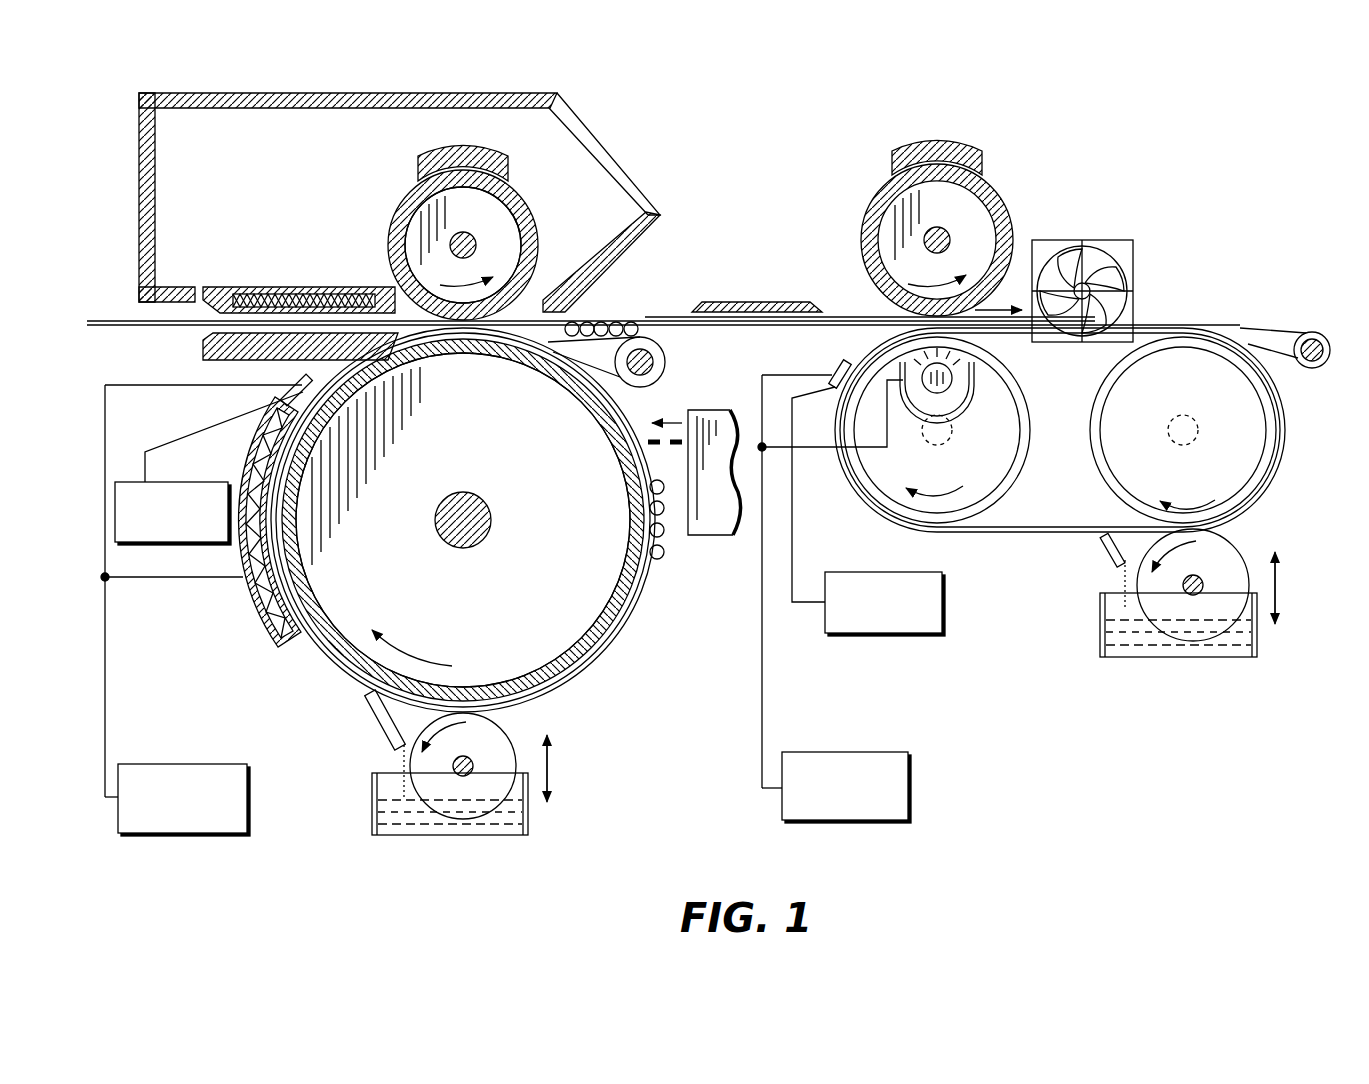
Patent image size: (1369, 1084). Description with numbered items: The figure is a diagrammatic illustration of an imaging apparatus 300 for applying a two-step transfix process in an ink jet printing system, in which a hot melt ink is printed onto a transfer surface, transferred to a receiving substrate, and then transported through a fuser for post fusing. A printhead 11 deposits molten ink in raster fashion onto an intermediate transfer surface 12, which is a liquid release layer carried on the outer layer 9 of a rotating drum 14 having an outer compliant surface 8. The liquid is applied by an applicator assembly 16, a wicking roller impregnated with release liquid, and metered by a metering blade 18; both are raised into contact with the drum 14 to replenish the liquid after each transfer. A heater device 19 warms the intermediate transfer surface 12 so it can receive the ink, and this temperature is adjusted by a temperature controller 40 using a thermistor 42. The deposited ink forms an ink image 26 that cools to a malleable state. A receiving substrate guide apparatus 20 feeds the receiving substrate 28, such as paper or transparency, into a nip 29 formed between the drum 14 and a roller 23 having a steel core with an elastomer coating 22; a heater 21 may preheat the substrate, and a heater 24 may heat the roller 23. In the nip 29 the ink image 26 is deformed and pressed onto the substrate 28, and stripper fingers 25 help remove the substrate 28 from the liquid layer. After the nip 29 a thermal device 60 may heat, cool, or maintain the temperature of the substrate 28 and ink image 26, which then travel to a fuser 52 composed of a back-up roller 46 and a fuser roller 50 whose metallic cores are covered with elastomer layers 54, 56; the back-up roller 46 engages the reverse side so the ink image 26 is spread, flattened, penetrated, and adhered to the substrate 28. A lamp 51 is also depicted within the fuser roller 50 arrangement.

The fuser apparatus 300 is at (130, 126).
The receiving substrate 28 is at (130, 320).
The heater 21 is at (250, 287).
The receiving substrate guide apparatus 20 is at (205, 350).
The elastomer coating 22 is at (537, 228).
The roller 23 is at (410, 205).
The heater 24 is at (508, 160).
The nip 29 is at (515, 309).
The outer compliant surface 8 is at (606, 638).
The drum 14 is at (608, 600).
The intermediate transfer surface 12 is at (642, 596).
The outer layer 9 is at (582, 666).
The heater device 19 is at (250, 450).
The thermistor 42 is at (133, 490).
The temperature controller 40 is at (246, 834).
The metering blade 18 is at (378, 729).
The applicator assembly 16 is at (535, 838).
The stripper fingers 25 is at (648, 381).
The ink image 26 is at (656, 344).
The printhead 11 is at (720, 410).
The thermal device 60 is at (745, 302).
The back-up roller 46 is at (870, 196).
The fuser 52 is at (1024, 184).
The fuser roller 50 is at (1020, 477).
The lamp heater 51 is at (886, 332).
The elastomer layer 54 is at (945, 618).
The elastomer layer 56 is at (905, 790).